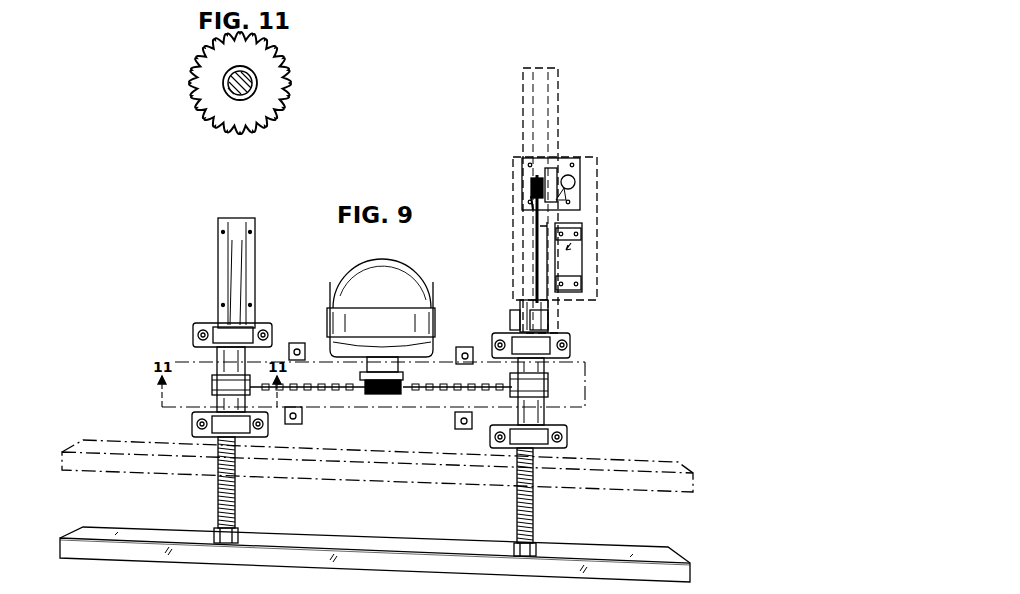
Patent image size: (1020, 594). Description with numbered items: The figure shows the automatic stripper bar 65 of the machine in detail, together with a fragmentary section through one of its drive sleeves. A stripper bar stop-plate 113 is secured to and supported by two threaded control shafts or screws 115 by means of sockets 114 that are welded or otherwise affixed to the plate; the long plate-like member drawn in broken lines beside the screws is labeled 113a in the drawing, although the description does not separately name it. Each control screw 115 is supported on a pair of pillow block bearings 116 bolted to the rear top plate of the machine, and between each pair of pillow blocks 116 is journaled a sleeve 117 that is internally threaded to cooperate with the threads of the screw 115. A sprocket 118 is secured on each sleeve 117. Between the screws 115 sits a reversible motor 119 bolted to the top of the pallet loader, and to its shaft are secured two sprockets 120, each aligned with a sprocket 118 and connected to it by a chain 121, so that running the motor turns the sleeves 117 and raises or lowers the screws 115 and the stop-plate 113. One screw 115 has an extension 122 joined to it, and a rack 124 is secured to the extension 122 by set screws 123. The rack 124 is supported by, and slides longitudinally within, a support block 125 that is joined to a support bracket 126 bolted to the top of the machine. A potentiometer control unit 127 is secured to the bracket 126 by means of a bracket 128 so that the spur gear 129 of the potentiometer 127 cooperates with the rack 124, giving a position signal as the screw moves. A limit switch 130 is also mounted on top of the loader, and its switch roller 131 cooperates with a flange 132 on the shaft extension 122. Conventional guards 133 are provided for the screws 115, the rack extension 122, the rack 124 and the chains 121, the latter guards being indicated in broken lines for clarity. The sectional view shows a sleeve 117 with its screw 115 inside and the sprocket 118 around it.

In FIG. 9, the automatic stripper bar 65 is at (61, 569).
In FIG. 9, the stripper bar stop-plate 113 is at (678, 574).
In FIG. 9, the cross beam 113a is at (693, 492).
In FIG. 9, the socket 114 is at (238, 540).
In FIG. 11, the threaded control shaft or screw 115 is at (244, 83).
In FIG. 9, the threaded control shaft or screw 115 is at (236, 503).
In FIG. 9, the pillow block bearing 116 is at (193, 330).
In FIG. 11, the sleeve 117 is at (252, 92).
In FIG. 9, the sleeve 117 is at (215, 357).
In FIG. 11, the sprocket 118 is at (257, 118).
In FIG. 9, the sprocket 118 is at (217, 383).
In FIG. 9, the reversible motor 119 is at (405, 278).
In FIG. 9, the sprocket 120 is at (367, 375).
In FIG. 9, the chain 121 is at (300, 390).
In FIG. 9, the extension 122 is at (548, 325).
In FIG. 9, the set screw 123 is at (512, 318).
In FIG. 9, the rack 124 is at (535, 265).
In FIG. 9, the support block 125 is at (530, 187).
In FIG. 9, the support bracket 126 is at (580, 200).
In FIG. 9, the potentiometer control unit 127 is at (560, 205).
In FIG. 9, the bracket 128 is at (548, 165).
In FIG. 9, the spur gear 129 is at (532, 200).
In FIG. 9, the limit switch 130 is at (560, 268).
In FIG. 9, the switch roller 131 is at (547, 228).
In FIG. 9, the flange 132 is at (548, 315).
In FIG. 9, the guard 133 is at (248, 300).